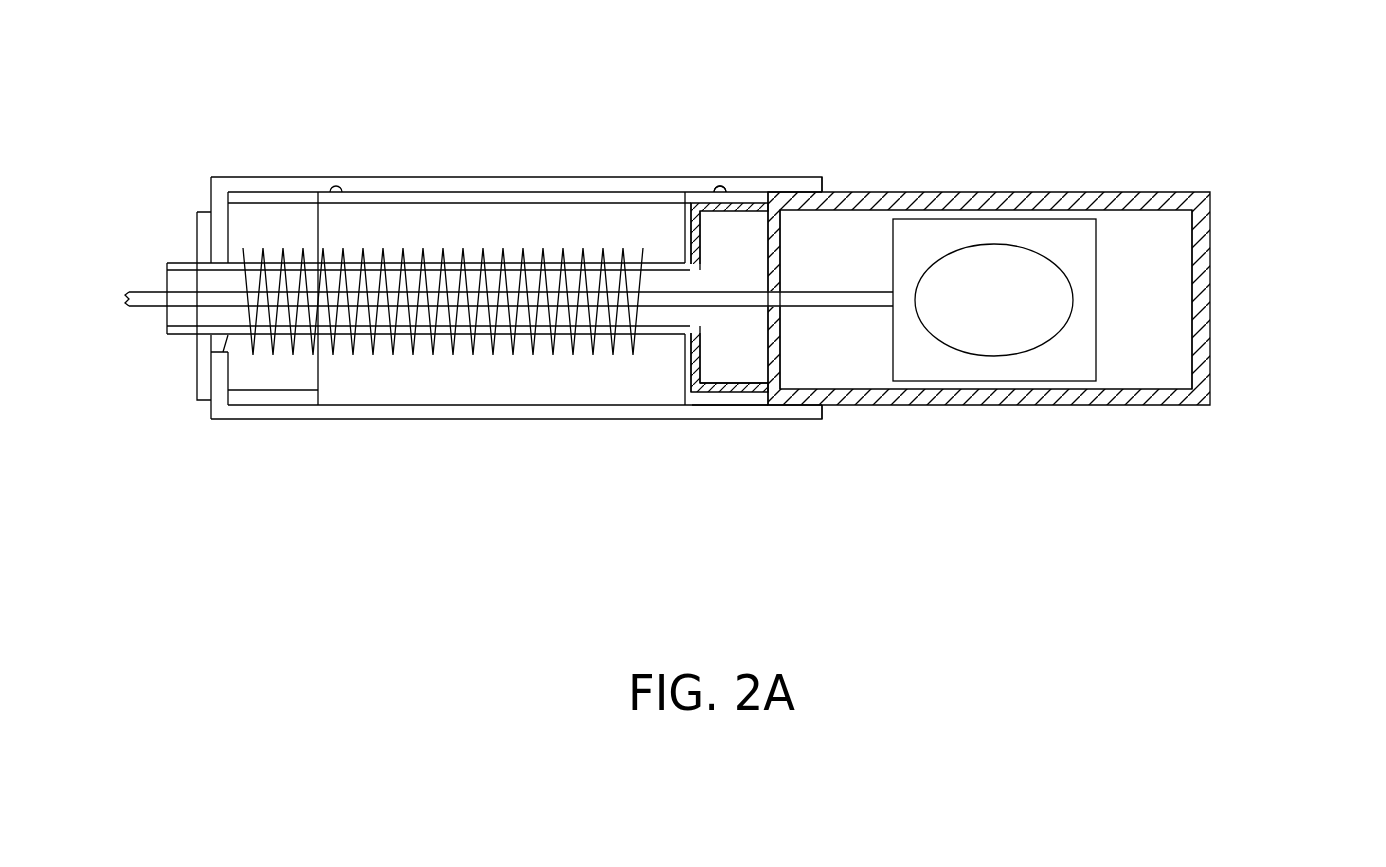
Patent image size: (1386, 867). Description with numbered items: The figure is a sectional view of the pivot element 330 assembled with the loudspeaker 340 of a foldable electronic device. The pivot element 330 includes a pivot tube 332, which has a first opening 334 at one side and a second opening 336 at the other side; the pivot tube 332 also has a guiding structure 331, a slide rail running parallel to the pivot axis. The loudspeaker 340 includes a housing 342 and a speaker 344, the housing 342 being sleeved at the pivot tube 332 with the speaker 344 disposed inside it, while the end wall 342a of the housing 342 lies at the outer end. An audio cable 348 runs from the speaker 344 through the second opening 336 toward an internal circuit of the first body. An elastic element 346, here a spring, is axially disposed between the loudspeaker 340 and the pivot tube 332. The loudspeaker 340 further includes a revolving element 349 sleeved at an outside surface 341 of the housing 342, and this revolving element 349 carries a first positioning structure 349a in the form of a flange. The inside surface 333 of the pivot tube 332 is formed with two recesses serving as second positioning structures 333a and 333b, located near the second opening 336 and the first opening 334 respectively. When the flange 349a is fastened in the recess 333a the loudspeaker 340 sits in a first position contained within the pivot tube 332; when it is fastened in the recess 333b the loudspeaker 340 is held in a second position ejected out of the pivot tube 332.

The pivot element 330 is at (348, 232).
The guiding structure 331 is at (372, 200).
The pivot tube 332 is at (465, 184).
The inside surface 333 is at (596, 205).
The second positioning structure 333a is at (341, 397).
The second positioning structure 333b is at (728, 402).
The first opening 334 is at (811, 199).
The second opening 336 is at (216, 275).
The loudspeaker 340 is at (996, 139).
The outside surface 341 is at (751, 398).
The housing 342 is at (1133, 192).
The cylinder end wall 342a is at (1224, 305).
The speaker 344 is at (998, 337).
The elastic element 346 is at (527, 357).
The audio cable 348 is at (124, 297).
The revolving element 349 is at (747, 203).
The first positioning structure 349a is at (720, 188).